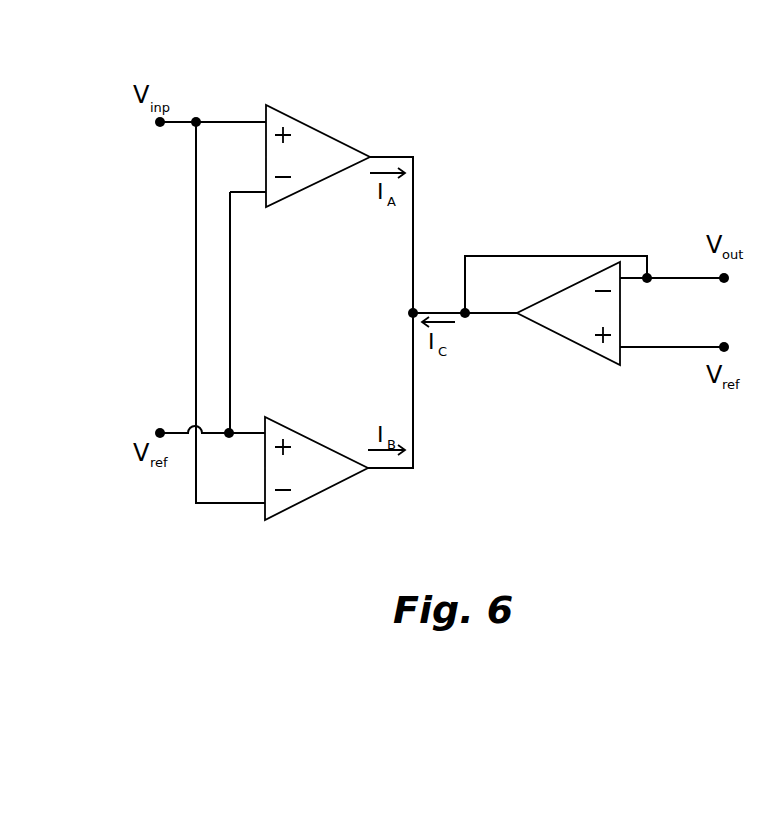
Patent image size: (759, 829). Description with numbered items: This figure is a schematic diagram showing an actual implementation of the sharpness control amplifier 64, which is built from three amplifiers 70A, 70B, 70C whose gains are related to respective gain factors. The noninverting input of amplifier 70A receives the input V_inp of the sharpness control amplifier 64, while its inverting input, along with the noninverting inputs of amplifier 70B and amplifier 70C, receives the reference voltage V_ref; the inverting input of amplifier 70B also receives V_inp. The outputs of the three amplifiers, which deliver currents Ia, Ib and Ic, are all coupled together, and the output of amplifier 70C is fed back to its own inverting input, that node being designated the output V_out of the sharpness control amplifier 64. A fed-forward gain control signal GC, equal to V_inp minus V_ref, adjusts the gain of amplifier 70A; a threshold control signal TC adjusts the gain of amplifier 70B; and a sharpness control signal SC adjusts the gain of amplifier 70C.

The sharpness control amplifier 64 is at (176, 525).
The amplifier 70A is at (300, 193).
The amplifier 70B is at (300, 430).
The amplifier 70C is at (543, 297).
The gain control signal GC is at (323, 122).
The threshold control signal TC is at (321, 503).
The sharpness control signal SC is at (582, 351).